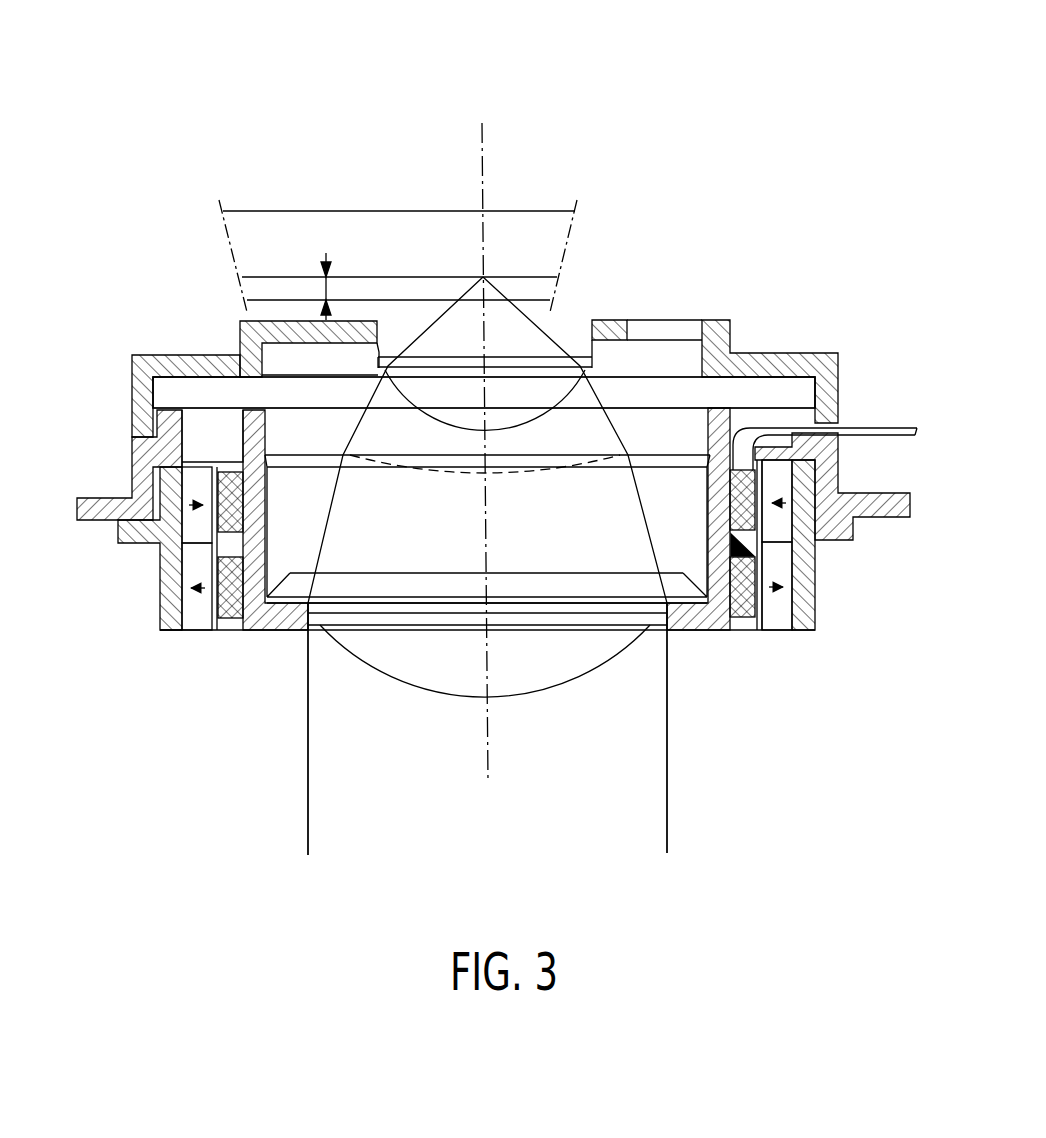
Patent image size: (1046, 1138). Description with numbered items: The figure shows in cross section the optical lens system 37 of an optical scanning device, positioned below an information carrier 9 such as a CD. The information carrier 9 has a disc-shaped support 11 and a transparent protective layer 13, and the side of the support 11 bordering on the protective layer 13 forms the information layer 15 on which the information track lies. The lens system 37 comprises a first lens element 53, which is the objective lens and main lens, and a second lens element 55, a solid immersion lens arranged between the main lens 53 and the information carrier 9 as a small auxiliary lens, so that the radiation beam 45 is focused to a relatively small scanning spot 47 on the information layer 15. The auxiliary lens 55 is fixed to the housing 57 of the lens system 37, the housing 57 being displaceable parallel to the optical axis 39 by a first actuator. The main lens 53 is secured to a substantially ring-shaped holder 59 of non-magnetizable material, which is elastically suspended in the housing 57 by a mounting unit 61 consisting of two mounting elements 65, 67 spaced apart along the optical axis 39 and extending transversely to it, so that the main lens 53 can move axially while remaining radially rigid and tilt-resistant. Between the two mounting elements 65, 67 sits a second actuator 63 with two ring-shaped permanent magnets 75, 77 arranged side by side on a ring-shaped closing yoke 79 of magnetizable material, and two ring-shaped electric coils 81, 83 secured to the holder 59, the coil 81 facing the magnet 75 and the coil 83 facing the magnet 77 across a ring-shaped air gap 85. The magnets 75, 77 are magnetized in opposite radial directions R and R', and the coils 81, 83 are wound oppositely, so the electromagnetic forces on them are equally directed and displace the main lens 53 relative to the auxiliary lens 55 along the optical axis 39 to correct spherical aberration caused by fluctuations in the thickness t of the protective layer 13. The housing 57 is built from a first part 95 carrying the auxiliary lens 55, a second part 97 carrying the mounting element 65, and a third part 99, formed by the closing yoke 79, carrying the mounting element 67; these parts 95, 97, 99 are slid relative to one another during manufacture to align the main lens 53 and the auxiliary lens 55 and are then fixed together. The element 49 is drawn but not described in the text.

The information carrier 9 is at (301, 117).
The disc-shaped support 11 is at (420, 220).
The transparent protective layer 13 is at (255, 285).
The information layer 15 is at (283, 277).
The optical lens system 37 is at (174, 837).
The optical axis 39 is at (490, 758).
The radiation beam 45 is at (668, 803).
The scanning spot 47 is at (483, 277).
The light beam 49 is at (487, 729).
The first lens element 53 is at (412, 673).
The second lens element 55 is at (580, 333).
The housing 57 is at (118, 406).
The holder 59 is at (726, 628).
The mounting unit 61 is at (652, 407).
The second actuator 63 is at (115, 602).
The mounting element 65 is at (484, 392).
The mounting element 67 is at (220, 622).
The permanent magnet 75 is at (190, 478).
The permanent magnet 77 is at (193, 620).
The closing yoke 79 is at (175, 553).
The electric coil 81 is at (238, 495).
The electric coil 83 is at (250, 590).
The air gap 85 is at (215, 498).
The first part 95 is at (140, 365).
The second part 97 is at (140, 450).
The third part 99 is at (168, 625).